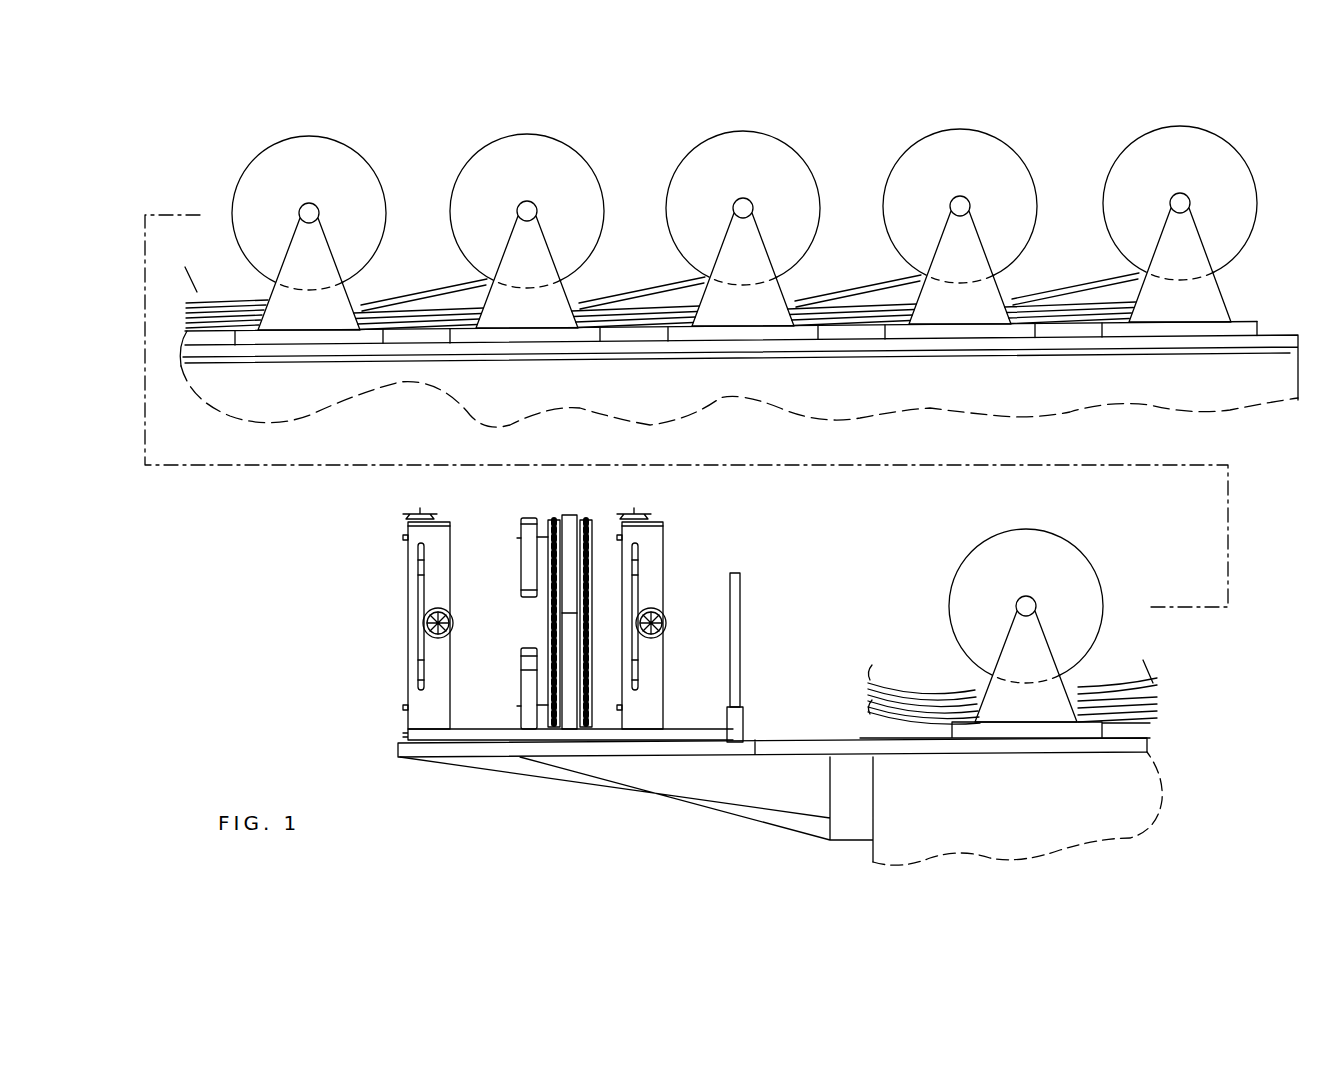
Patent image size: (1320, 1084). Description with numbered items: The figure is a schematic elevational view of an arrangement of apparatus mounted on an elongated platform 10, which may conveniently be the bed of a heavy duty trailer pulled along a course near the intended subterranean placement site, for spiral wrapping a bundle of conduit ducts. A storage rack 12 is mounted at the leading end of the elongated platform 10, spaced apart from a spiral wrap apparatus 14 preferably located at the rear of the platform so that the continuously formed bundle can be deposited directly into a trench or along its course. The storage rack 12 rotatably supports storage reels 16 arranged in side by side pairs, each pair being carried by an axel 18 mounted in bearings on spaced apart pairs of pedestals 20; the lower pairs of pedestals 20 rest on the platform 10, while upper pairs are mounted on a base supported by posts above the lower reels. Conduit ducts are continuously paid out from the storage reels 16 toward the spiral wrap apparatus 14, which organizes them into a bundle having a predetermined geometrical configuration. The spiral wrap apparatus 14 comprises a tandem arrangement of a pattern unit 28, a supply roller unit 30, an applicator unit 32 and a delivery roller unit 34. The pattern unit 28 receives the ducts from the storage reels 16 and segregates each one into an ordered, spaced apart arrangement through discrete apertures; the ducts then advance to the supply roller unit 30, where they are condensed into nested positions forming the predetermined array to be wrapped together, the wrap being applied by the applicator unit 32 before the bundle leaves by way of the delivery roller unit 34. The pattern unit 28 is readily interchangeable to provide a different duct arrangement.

The elongated platform 10 is at (953, 745).
The storage rack 12 is at (998, 95).
The spiral wrap apparatus 14 is at (757, 506).
The storage reels 16 is at (255, 160).
The axel 18 is at (311, 211).
The pedestals 20 is at (338, 302).
The pattern unit 28 is at (738, 573).
The supply roller unit 30 is at (657, 517).
The applicator unit 32 is at (566, 516).
The delivery roller unit 34 is at (440, 518).